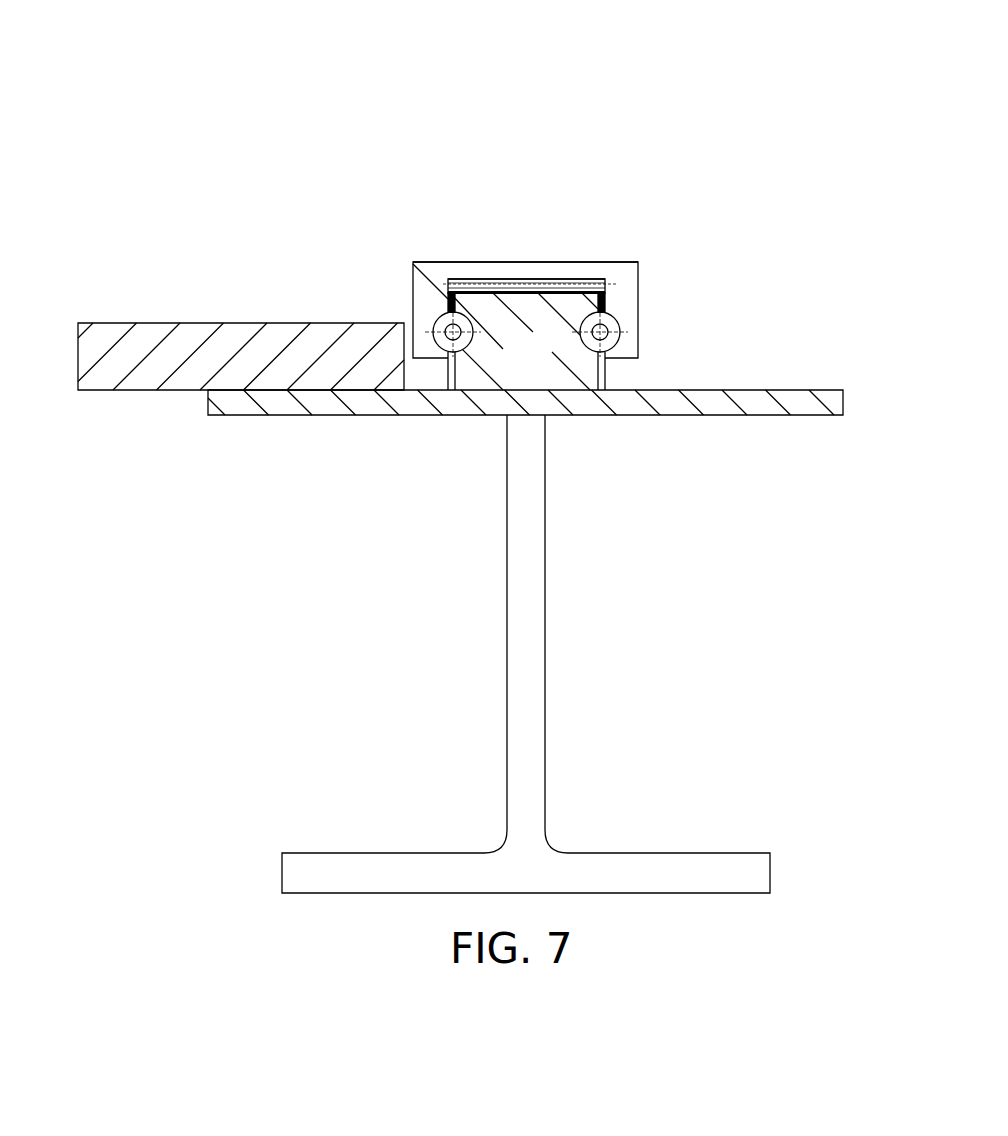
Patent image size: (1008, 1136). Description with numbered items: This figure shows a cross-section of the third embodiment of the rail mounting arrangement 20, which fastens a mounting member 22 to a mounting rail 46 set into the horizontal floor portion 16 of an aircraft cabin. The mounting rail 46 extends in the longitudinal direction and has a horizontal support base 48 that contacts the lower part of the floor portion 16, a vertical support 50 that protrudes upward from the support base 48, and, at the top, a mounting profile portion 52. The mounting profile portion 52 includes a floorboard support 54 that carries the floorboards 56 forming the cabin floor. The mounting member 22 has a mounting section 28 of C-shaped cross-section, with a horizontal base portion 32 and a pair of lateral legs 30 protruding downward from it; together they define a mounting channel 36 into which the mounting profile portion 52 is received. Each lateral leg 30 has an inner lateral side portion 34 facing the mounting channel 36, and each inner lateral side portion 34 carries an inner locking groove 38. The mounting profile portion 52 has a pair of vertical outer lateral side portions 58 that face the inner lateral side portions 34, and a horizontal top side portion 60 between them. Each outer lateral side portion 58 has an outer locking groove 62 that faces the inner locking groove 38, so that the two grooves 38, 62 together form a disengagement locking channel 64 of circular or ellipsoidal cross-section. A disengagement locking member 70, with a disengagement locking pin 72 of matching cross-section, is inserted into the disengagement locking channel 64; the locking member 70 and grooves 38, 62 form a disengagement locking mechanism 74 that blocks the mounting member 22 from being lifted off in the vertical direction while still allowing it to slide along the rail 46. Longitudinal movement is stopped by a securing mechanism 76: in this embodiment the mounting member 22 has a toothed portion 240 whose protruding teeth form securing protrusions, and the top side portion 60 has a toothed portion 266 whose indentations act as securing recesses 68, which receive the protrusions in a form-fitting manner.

The floor portion 16 is at (177, 80).
The rail mounting arrangement 20 is at (257, 100).
The mounting member 22 is at (536, 287).
The mounting section 28 is at (403, 253).
The lateral legs 30 is at (420, 287).
The base portion 32 is at (453, 273).
The inner lateral side portion 34 is at (597, 362).
The mounting channel 36 is at (500, 296).
The inner locking groove 38 is at (433, 331).
The mounting rail 46 is at (526, 654).
The support base 48 is at (665, 873).
The vertical support 50 is at (523, 663).
The mounting profile portion 52 is at (605, 115).
The floorboard support 54 is at (322, 403).
The floorboards 56 is at (143, 337).
The outer lateral side portions 58 is at (500, 346).
The top side portion 60 is at (520, 290).
The outer locking groove 62 is at (447, 300).
The disengagement locking channel 64 is at (448, 350).
The securing recesses 68 is at (548, 293).
The disengagement locking member 70 is at (452, 352).
The disengagement locking pin 72 is at (601, 352).
The disengagement locking mechanism 74 is at (645, 238).
The securing mechanism 76 is at (657, 138).
The toothed portion 240 is at (483, 279).
The toothed portion 266 is at (607, 285).